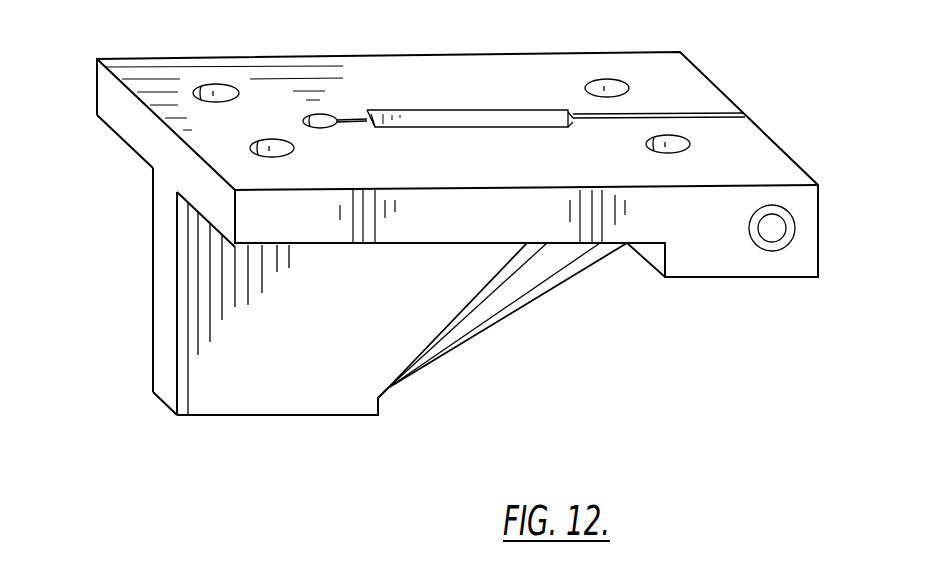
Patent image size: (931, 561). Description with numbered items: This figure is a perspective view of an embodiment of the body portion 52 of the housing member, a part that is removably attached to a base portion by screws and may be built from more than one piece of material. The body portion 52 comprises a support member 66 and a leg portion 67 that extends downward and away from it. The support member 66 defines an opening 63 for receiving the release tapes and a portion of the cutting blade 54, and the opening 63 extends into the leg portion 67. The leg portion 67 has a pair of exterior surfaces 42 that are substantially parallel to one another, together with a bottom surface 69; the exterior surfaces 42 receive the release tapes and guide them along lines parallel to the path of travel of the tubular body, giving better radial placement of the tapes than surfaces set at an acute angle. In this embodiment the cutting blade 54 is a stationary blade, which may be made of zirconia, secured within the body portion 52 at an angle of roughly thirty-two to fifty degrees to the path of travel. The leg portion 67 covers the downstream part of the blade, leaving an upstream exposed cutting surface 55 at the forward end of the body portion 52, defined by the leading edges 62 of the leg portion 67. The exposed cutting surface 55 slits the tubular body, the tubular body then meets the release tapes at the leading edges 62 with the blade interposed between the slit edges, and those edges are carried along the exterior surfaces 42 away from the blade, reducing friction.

The exterior surfaces 42 is at (220, 352).
The body portion 52 is at (295, 42).
The cutting blade 54 is at (540, 312).
The exposed cutting surface 55 is at (563, 282).
The leading edges 62 is at (455, 320).
The opening 63 is at (528, 106).
The support member 66 is at (79, 87).
The leg portion 67 is at (162, 287).
The bottom surface 69 is at (238, 416).